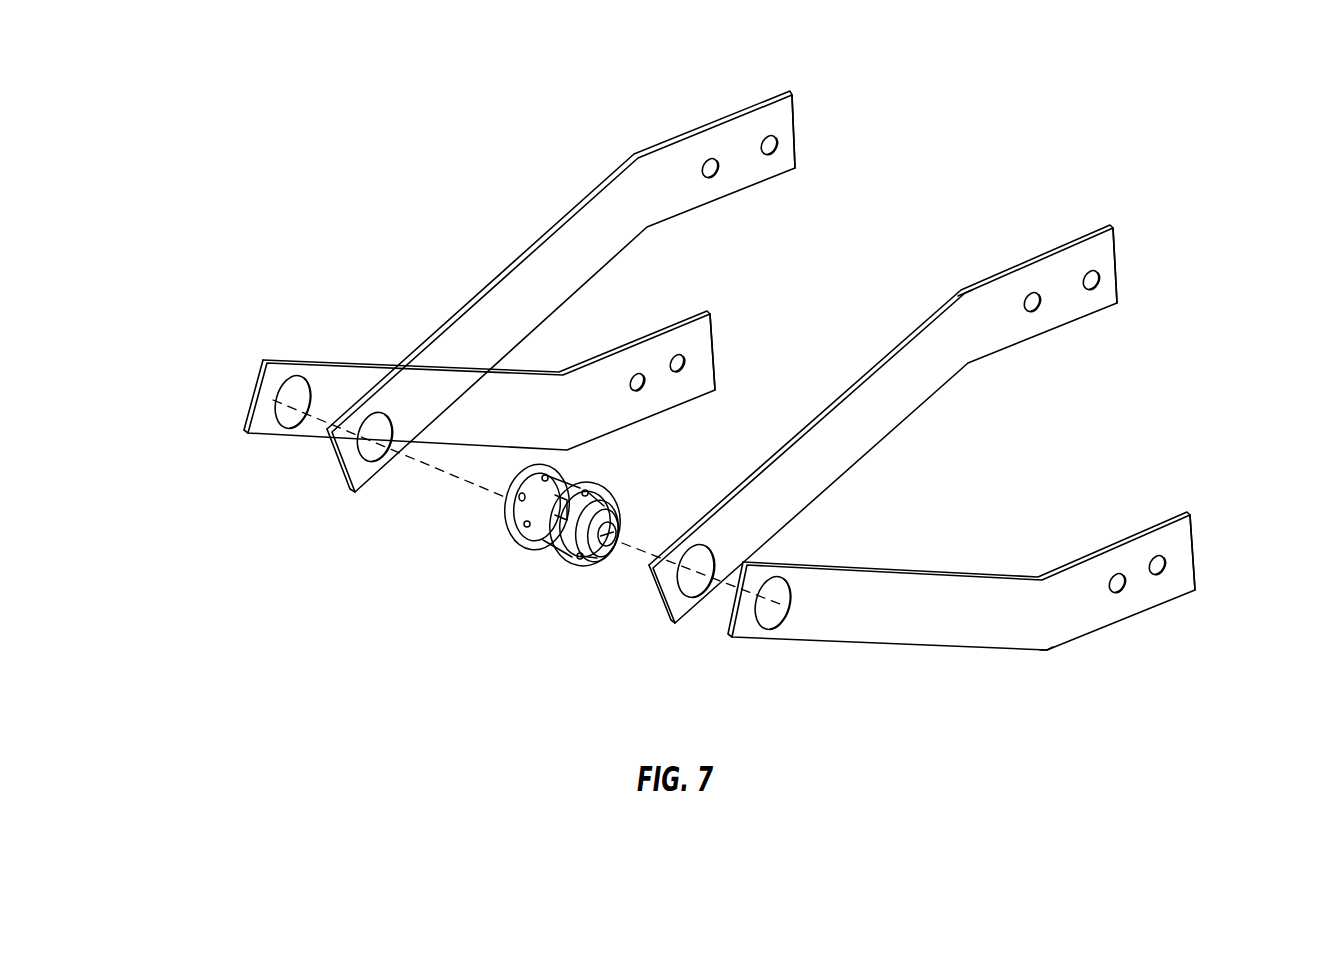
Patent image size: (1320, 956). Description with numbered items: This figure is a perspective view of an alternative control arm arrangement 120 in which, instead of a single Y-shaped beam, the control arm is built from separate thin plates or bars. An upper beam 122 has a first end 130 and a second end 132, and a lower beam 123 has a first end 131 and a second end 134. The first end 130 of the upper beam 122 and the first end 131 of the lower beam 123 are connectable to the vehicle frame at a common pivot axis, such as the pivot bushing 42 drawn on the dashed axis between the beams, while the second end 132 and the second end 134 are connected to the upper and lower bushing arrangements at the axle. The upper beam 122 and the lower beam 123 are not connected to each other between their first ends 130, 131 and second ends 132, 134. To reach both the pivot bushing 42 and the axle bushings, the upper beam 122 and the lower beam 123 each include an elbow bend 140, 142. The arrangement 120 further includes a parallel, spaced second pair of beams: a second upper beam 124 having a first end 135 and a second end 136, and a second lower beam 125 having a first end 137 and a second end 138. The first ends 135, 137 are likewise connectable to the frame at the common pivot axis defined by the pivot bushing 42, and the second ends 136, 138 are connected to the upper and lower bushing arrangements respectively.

The control arm arrangement 120 is at (316, 170).
The upper beam 122 is at (773, 457).
The lower beam 123 is at (937, 578).
The second upper beam 124 is at (513, 268).
The second lower beam 125 is at (606, 355).
The pivot bushing 42 is at (521, 558).
The first end of upper beam 130 is at (663, 594).
The first end of lower beam 131 is at (730, 618).
The second end of upper beam 132 is at (1120, 266).
The second end of lower beam 134 is at (1197, 553).
The first end of second upper beam 135 is at (338, 463).
The second end of second upper beam 136 is at (797, 140).
The first end of second lower beam 137 is at (255, 397).
The second end of second lower beam 138 is at (717, 353).
The elbow bend 140 is at (963, 291).
The elbow bend 142 is at (1043, 652).